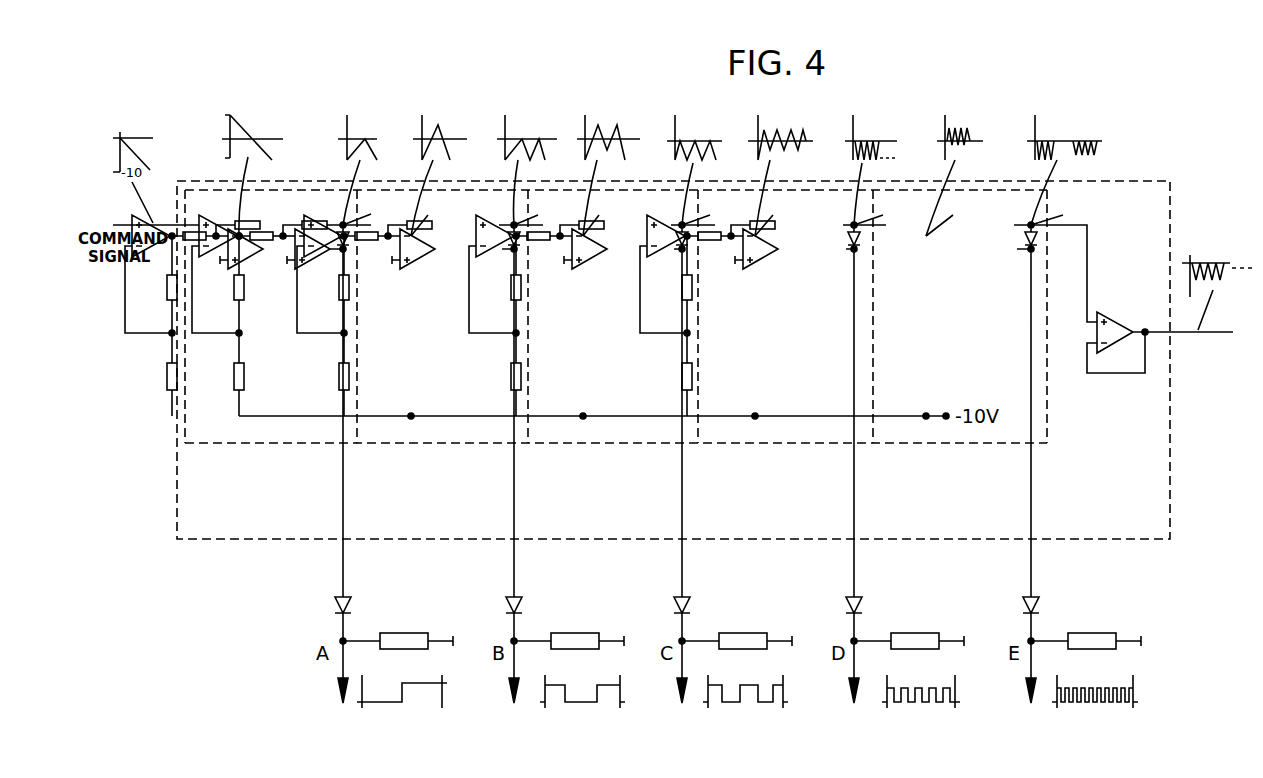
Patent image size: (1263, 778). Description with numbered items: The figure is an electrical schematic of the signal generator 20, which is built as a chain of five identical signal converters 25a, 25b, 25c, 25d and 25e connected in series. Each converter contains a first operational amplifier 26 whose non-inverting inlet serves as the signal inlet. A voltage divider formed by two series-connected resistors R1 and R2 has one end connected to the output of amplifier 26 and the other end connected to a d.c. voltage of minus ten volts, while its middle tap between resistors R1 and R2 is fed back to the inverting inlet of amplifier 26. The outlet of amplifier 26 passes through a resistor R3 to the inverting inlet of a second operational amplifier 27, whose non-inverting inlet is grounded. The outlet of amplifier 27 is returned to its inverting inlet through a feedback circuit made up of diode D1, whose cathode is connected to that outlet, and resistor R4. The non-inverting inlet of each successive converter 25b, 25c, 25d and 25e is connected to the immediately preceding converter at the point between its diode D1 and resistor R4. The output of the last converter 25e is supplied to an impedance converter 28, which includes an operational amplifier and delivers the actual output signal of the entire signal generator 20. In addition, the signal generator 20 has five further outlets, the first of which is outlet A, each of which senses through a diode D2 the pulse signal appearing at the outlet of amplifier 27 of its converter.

The signal generator 20 is at (255, 515).
The signal converter 25a is at (288, 428).
The signal converter 25b is at (458, 428).
The signal converter 25c is at (620, 434).
The signal converter 25d is at (790, 434).
The signal converter 25e is at (980, 434).
The first operational amplifier 26 is at (221, 261).
The second operational amplifier 27 is at (316, 262).
The impedance converter 28 is at (1118, 322).
The resistor R1 is at (254, 299).
The resistor R2 is at (254, 389).
The resistor R3 is at (272, 246).
The resistor R4 is at (313, 218).
The diode D1 is at (510, 247).
The diode D2 is at (377, 649).
The outlet A is at (239, 236).